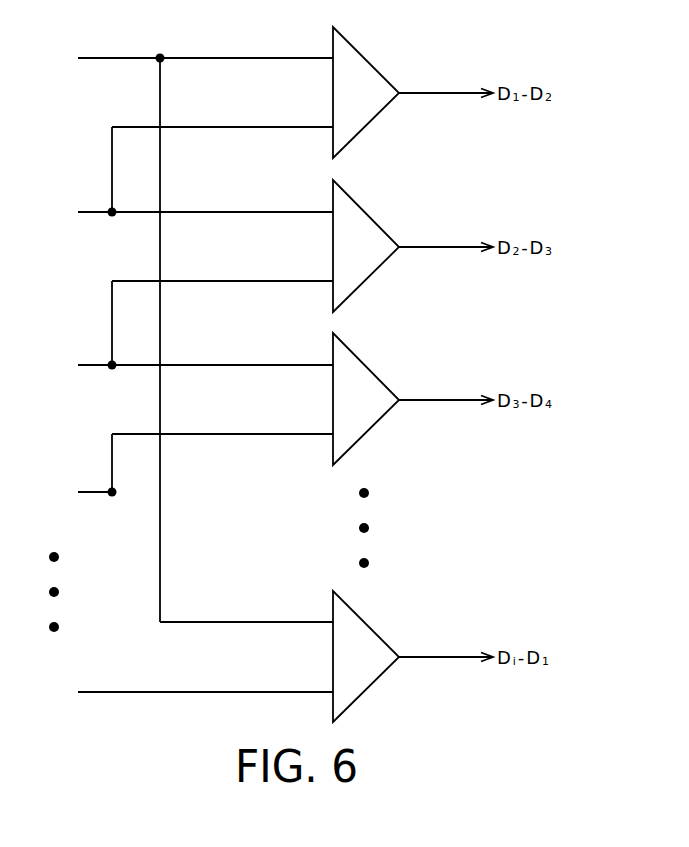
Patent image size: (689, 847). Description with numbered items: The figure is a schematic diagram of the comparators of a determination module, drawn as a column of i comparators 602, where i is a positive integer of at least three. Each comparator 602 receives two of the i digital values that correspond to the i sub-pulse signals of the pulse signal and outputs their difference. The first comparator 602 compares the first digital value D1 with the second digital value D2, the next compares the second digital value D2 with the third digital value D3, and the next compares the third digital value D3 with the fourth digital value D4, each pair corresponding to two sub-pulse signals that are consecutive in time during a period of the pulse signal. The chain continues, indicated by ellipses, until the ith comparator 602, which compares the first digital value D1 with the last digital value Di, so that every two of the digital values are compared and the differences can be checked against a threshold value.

The comparator 602 is at (368, 58).
The first digital value D1 is at (191, 335).
The second digital value D2 is at (191, 175).
The third digital value D3 is at (191, 328).
The fourth digital value D4 is at (191, 468).
The ith digital value Di is at (191, 692).